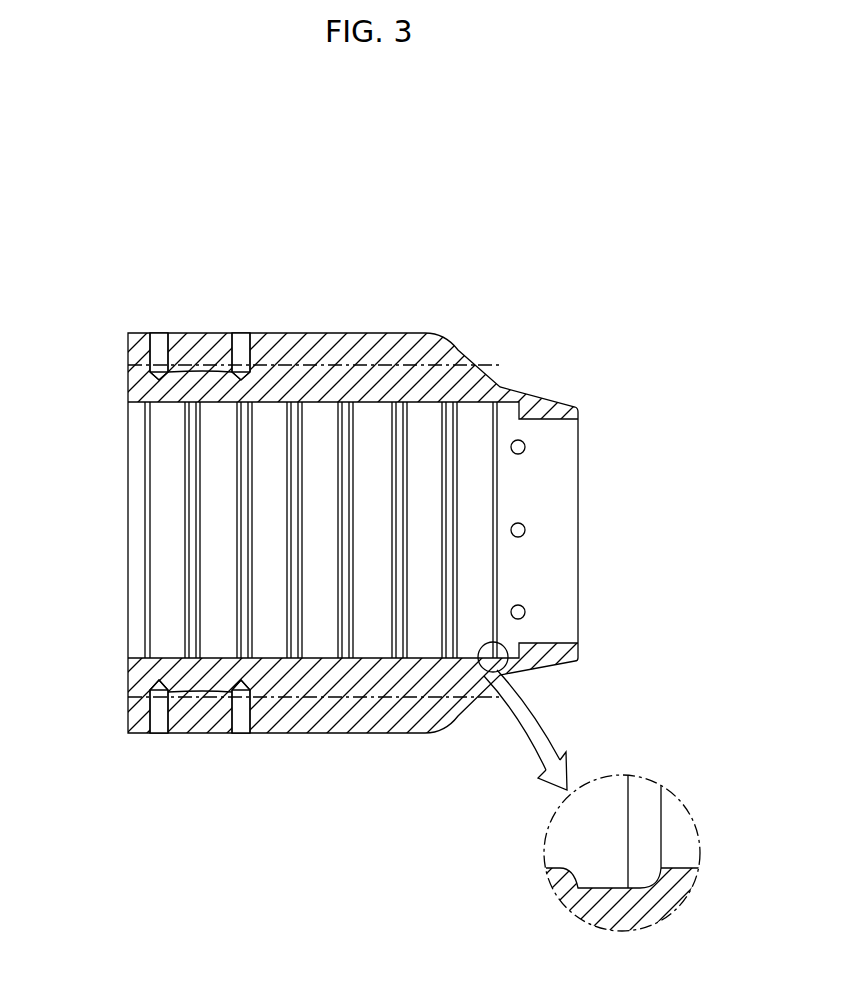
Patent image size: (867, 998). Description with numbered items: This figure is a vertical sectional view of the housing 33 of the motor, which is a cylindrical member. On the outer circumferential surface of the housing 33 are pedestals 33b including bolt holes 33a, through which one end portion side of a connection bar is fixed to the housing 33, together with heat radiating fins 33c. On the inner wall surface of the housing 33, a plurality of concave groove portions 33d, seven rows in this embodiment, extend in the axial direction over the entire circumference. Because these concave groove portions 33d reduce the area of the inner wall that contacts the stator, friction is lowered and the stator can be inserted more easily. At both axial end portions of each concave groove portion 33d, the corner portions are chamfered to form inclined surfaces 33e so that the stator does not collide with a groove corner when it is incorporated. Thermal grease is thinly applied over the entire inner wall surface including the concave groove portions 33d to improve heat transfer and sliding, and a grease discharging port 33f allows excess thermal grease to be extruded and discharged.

The housing 33 is at (505, 295).
The bolt holes 33a is at (157, 330).
The pedestals 33b is at (478, 484).
The heat radiating fins 33c is at (212, 350).
The concave groove portions 33d is at (562, 868).
The inclined surfaces 33e is at (665, 870).
The grease discharging port 33f is at (520, 668).